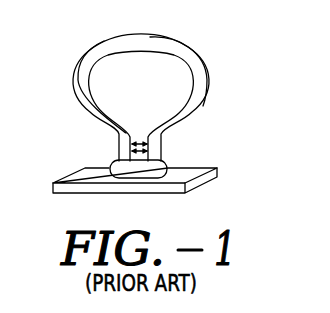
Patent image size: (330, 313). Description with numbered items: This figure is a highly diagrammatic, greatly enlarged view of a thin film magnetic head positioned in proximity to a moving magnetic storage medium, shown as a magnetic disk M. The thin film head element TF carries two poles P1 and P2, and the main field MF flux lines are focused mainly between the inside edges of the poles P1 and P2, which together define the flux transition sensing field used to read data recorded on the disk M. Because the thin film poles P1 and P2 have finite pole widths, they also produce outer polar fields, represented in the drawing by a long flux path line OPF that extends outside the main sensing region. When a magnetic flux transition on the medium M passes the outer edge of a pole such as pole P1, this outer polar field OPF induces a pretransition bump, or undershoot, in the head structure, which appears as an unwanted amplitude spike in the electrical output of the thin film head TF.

The thin film head element TF is at (194, 69).
The main field MF is at (131, 142).
The pole P1 is at (122, 154).
The pole P2 is at (162, 161).
The outer polar field OPF is at (212, 168).
The magnetic disk M is at (85, 178).